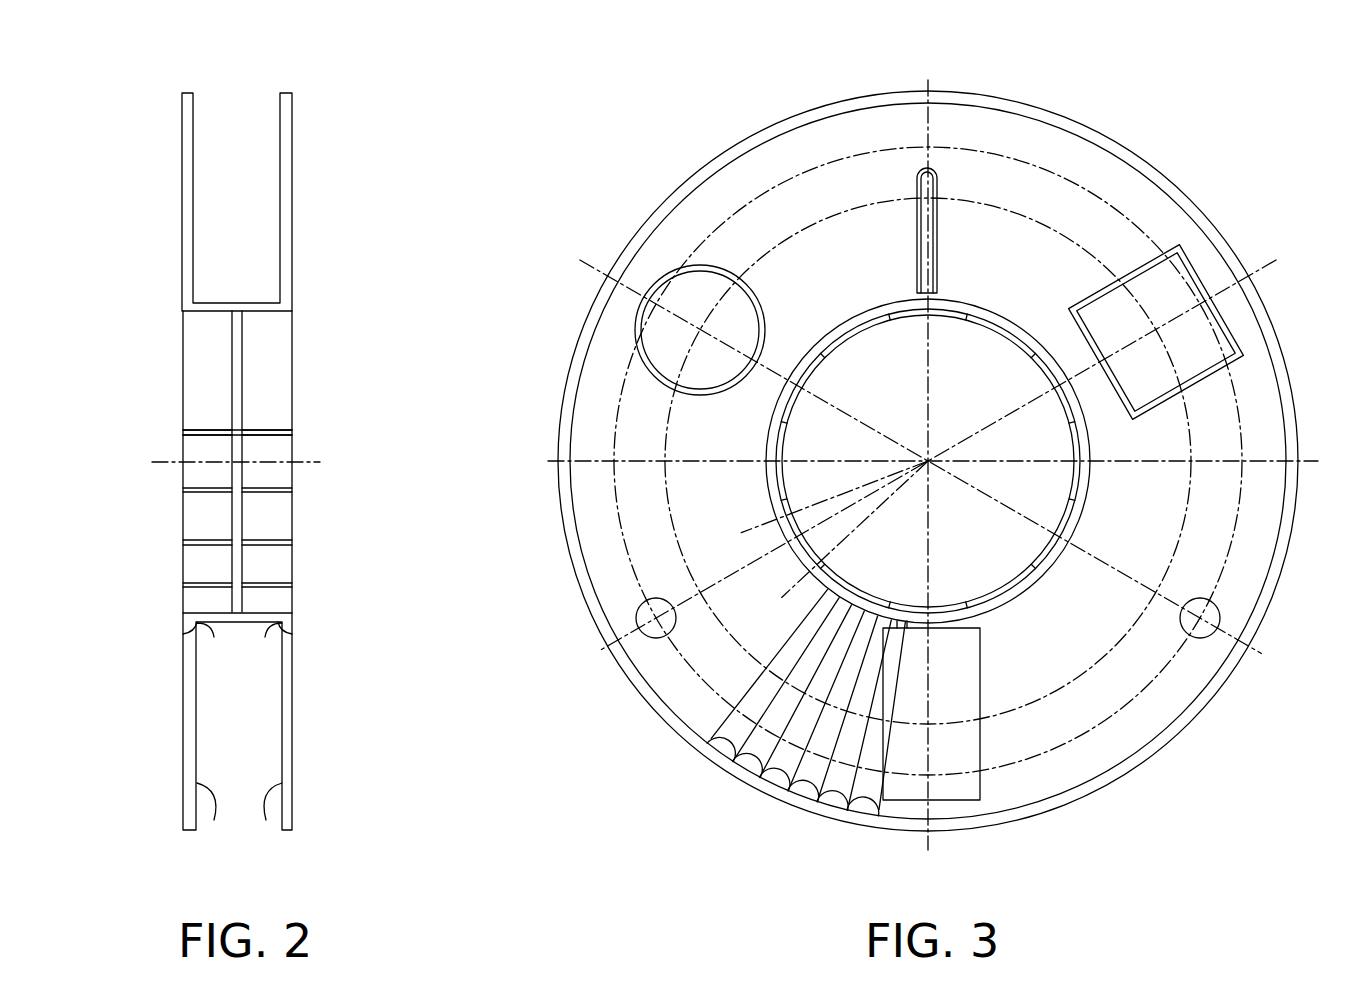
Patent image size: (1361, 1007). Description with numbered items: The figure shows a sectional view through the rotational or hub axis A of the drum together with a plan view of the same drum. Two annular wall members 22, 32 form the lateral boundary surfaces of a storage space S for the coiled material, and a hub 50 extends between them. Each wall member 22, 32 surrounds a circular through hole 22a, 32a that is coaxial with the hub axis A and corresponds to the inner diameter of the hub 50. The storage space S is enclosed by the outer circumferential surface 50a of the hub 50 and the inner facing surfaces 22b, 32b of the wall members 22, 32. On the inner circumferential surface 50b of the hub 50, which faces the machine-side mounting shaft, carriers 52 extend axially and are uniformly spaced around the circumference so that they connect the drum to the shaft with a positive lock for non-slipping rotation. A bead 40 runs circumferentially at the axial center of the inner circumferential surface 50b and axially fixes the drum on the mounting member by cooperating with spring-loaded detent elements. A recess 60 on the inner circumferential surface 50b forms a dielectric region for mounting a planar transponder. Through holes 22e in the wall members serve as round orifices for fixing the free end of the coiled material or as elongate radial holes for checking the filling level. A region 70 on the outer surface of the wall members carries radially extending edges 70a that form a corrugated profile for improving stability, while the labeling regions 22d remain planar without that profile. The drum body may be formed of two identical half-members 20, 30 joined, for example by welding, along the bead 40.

In FIG. 2, the half-member 20 is at (147, 192).
In FIG. 2, the annular wall member 22 is at (182, 265).
In FIG. 3, the annular wall member 22 is at (928, 461).
In FIG. 2, the circular through hole 22a is at (214, 637).
In FIG. 2, the inner facing surface 22b is at (214, 820).
In FIG. 3, the labeling region 22d is at (664, 300).
In FIG. 3, the through hole 22e is at (936, 184).
In FIG. 2, the half-member 30 is at (303, 171).
In FIG. 2, the annular wall member 32 is at (292, 232).
In FIG. 2, the circular through hole 32a is at (293, 614).
In FIG. 2, the inner facing surface 32b is at (266, 820).
In FIG. 2, the bead 40 is at (244, 354).
In FIG. 2, the hub 50 is at (157, 397).
In FIG. 2, the outer circumferential surface 50a is at (208, 303).
In FIG. 2, the inner circumferential surface 50b is at (203, 312).
In FIG. 2, the carriers 52 is at (210, 436).
In FIG. 3, the recess 60 is at (986, 588).
In FIG. 3, the region 70 is at (739, 748).
In FIG. 3, the radially extending edges 70a is at (795, 771).
In FIG. 2, the storage space S is at (234, 200).
In FIG. 2, the hub axis A is at (300, 462).
In FIG. 3, the hub axis A is at (934, 452).